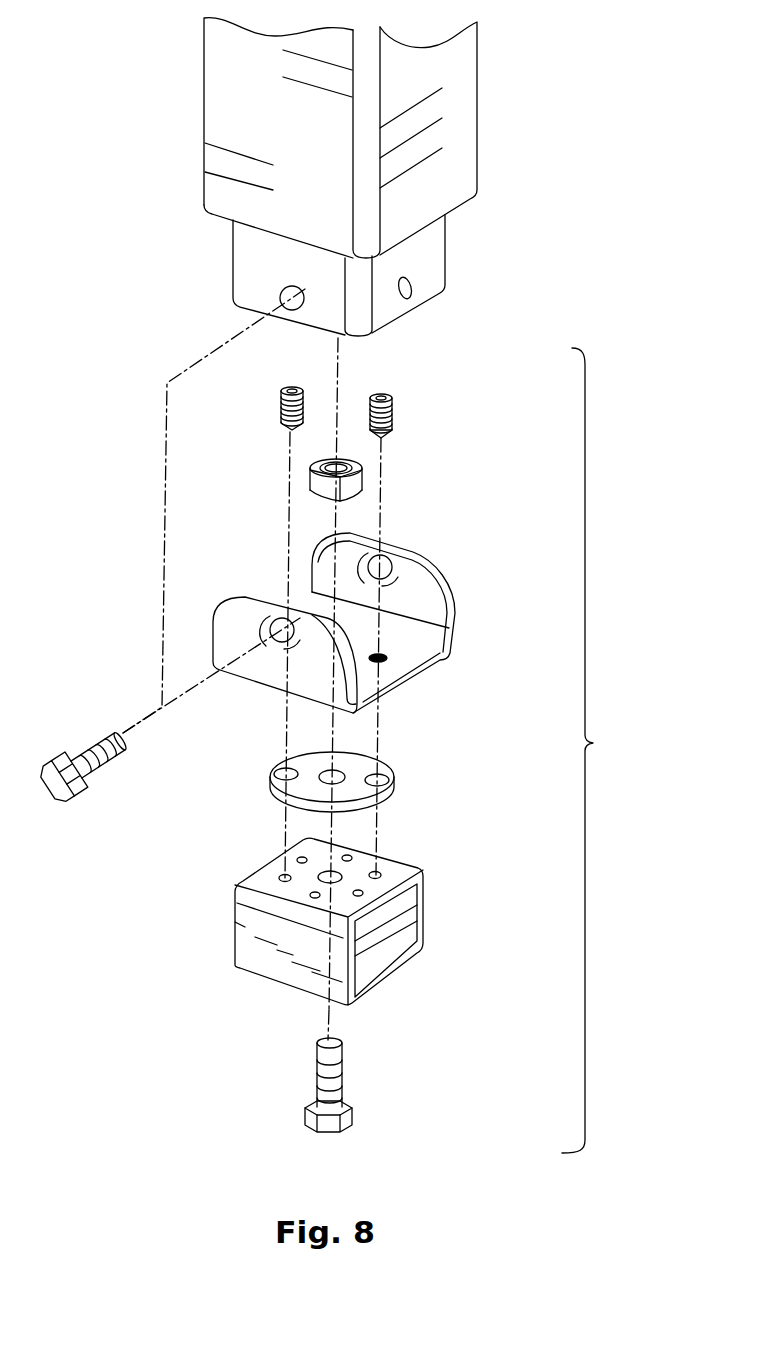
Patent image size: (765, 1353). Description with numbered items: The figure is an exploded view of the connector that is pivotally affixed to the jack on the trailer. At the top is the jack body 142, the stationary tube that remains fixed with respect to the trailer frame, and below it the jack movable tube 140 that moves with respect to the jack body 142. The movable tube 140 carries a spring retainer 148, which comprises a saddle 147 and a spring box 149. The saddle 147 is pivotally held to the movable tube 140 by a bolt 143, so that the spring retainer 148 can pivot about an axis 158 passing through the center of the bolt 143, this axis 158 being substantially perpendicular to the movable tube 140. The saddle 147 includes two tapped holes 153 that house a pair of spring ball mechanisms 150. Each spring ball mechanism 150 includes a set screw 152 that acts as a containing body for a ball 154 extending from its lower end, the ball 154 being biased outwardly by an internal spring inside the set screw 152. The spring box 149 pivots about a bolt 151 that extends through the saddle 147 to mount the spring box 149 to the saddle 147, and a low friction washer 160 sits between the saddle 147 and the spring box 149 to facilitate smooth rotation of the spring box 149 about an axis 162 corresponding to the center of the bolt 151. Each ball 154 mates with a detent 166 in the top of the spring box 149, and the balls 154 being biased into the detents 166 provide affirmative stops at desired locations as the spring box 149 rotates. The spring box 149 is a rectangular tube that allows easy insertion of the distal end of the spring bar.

The jack body 142 is at (458, 103).
The jack movable tube 140 is at (428, 253).
The axis 158 is at (210, 350).
The spring ball mechanism 150 is at (406, 411).
The set screw 152 is at (393, 414).
The ball 154 is at (383, 438).
The saddle 147 is at (242, 622).
The tapped hole 153 is at (388, 657).
The low friction washer 160 is at (357, 768).
The detent 166 is at (352, 858).
The spring box 149 is at (373, 954).
The bolt 143 is at (107, 763).
The axis 162 is at (327, 1013).
The bolt 151 is at (307, 1120).
The spring retainer 148 is at (603, 750).